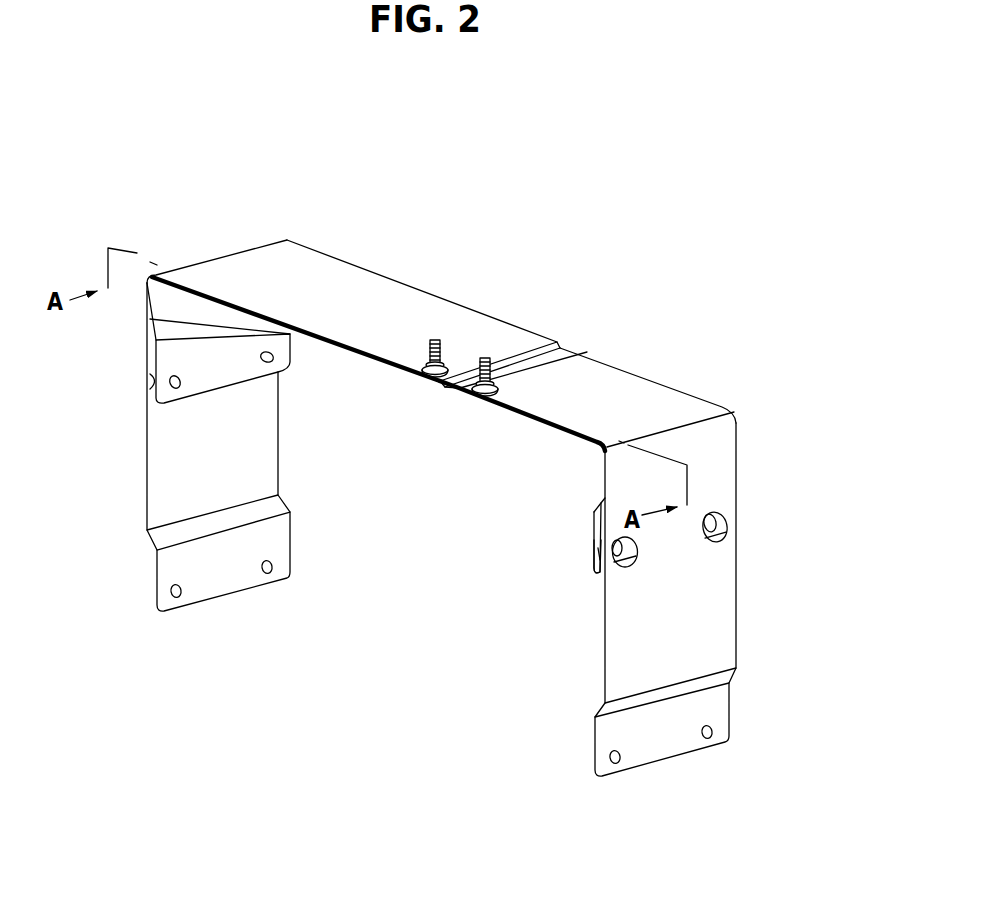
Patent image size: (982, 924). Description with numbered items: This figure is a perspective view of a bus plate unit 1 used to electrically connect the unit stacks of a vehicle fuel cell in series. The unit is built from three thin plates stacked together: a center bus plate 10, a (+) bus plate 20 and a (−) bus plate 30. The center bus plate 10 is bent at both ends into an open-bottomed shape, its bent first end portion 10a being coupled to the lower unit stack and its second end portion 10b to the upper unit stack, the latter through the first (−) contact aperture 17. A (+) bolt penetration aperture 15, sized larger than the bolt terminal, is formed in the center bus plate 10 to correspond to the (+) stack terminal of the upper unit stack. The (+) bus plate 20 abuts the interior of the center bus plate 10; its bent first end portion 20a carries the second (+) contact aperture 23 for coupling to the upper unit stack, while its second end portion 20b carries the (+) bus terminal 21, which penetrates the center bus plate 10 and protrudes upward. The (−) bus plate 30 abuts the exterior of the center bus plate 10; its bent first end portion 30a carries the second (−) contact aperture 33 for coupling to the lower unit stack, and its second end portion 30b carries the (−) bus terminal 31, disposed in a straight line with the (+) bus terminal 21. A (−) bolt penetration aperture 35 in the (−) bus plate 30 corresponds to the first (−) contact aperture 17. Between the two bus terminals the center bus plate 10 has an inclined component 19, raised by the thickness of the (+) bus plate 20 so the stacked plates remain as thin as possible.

The bus plate unit 1 is at (490, 190).
The center bus plate 10 is at (750, 636).
The first end portion 10a is at (717, 593).
The second end portion 10b is at (173, 356).
The (+) bolt penetration aperture 15 is at (723, 532).
The first (−) contact aperture 17 is at (283, 362).
The inclined component 19 is at (448, 393).
The (+) bus plate 20 is at (588, 548).
The first end portion 20a is at (594, 567).
The second end portion 20b is at (505, 410).
The (+) bus terminal 21 is at (484, 358).
The second (+) contact aperture 23 is at (705, 512).
The (−) bus plate 30 is at (167, 463).
The first end portion 30a is at (225, 580).
The second end portion 30b is at (467, 328).
The (−) bus terminal 31 is at (436, 340).
The second (−) contact aperture 33 is at (282, 572).
The (−) bolt penetration aperture 35 is at (140, 378).